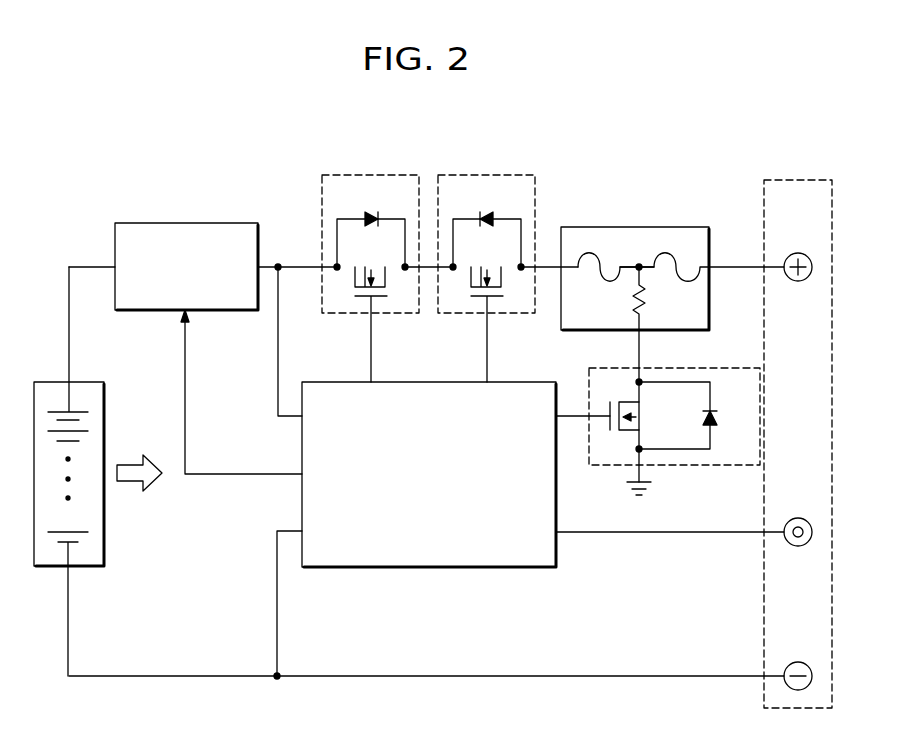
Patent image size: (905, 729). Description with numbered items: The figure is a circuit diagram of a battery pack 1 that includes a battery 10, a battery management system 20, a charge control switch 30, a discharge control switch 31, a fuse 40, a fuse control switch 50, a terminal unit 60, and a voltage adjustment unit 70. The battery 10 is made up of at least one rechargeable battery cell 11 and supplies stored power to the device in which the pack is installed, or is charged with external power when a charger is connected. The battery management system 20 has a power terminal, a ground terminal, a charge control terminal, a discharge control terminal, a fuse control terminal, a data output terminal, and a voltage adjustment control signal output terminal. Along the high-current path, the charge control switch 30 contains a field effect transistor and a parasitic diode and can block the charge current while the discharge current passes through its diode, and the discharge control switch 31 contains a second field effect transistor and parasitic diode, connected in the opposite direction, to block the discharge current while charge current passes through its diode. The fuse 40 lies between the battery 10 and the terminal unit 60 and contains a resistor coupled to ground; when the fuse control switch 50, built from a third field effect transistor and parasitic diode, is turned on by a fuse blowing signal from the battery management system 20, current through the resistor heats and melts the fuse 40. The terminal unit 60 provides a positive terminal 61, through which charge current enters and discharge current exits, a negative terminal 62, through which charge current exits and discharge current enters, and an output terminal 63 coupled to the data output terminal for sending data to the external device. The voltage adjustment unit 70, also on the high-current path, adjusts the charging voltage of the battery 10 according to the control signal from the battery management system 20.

The battery pack 1 is at (652, 153).
The battery 10 is at (83, 382).
The battery cell 11 is at (58, 410).
The battery management system (BMS) 20 is at (512, 383).
The charge control switch 30 is at (380, 175).
The discharge control switch 31 is at (496, 175).
The fuse 40 is at (640, 228).
The fuse control switch 50 is at (704, 368).
The terminal unit 60 is at (800, 180).
The positive terminal 61 is at (798, 253).
The negative terminal 62 is at (798, 662).
The output terminal 63 is at (798, 518).
The voltage adjustment unit 70 is at (192, 224).